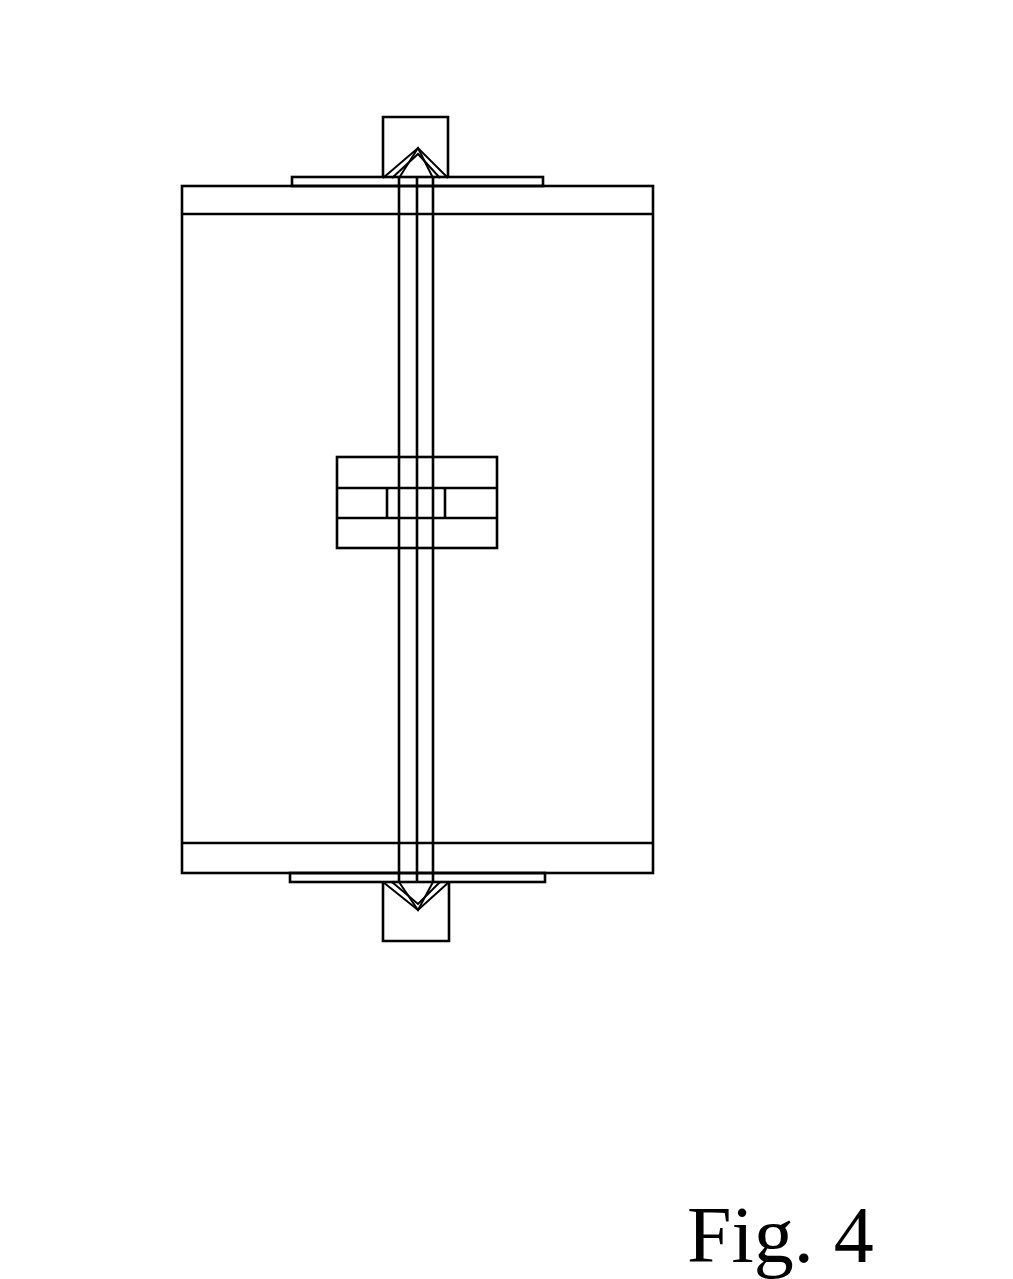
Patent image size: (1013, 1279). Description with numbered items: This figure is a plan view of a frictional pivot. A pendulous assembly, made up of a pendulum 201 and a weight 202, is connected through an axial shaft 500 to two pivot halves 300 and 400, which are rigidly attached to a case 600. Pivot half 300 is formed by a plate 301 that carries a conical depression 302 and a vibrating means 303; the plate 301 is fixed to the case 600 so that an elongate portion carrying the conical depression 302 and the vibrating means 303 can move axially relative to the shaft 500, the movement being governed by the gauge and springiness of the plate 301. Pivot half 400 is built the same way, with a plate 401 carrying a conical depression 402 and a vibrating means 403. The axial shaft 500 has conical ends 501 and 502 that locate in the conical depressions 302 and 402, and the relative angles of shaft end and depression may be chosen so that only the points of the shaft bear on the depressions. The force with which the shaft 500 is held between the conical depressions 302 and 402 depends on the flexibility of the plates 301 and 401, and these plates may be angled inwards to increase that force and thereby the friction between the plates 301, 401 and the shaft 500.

The pendulum 201 is at (362, 502).
The weight 202 is at (400, 489).
The pivot half 300 is at (443, 980).
The plate 301 is at (308, 880).
The conical depression 302 is at (433, 898).
The vibrating means 303 is at (383, 938).
The pivot half 400 is at (442, 100).
The plate 401 is at (305, 177).
The conical depression 402 is at (445, 158).
The vibrating means 403 is at (382, 118).
The axial shaft 500 is at (423, 393).
The conical end 501 is at (418, 918).
The conical end 502 is at (422, 148).
The case 600 is at (200, 735).